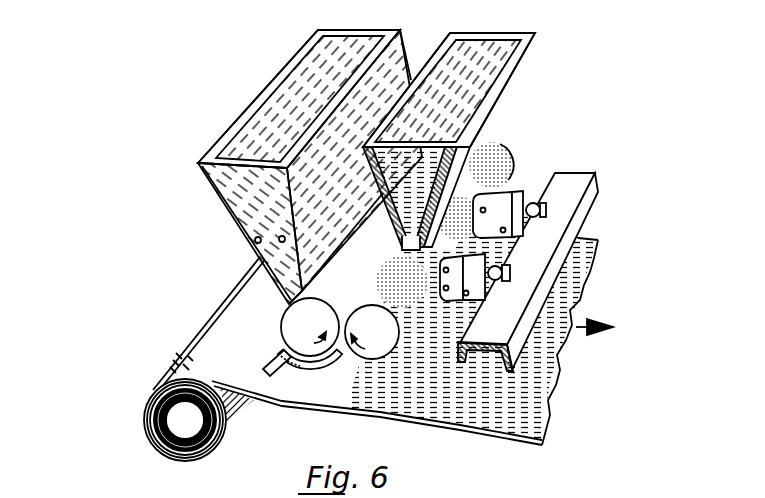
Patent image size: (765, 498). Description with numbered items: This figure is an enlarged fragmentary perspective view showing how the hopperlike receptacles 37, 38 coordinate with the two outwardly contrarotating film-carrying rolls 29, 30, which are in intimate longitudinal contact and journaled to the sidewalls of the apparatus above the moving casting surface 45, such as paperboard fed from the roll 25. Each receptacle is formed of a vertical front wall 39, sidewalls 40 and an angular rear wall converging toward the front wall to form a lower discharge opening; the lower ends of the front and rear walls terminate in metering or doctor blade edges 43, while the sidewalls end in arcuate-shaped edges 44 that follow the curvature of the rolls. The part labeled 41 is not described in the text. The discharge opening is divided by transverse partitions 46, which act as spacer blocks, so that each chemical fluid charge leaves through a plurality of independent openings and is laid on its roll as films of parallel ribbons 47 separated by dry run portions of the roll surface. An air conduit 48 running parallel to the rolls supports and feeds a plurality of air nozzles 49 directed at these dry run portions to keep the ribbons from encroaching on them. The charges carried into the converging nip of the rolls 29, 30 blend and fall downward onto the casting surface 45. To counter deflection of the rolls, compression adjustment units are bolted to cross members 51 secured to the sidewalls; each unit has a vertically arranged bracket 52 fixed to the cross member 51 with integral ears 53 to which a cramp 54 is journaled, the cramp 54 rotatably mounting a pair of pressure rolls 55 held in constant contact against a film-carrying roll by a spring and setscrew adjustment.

The roll 25 is at (160, 404).
The contrarotating film-carrying roll 29 is at (310, 327).
The contrarotating film-carrying roll 30 is at (372, 332).
The receptacle 37 is at (296, 99).
The receptacle 38 is at (613, 32).
The vertical front wall 39 is at (398, 62).
The sidewall 40 is at (248, 226).
The trough rim flange 41 is at (213, 188).
The metering or doctor blade edge 43 is at (395, 249).
The arcuate-shaped edge 44 is at (284, 298).
The casting surface 45 is at (330, 387).
The transverse partition 46 is at (398, 238).
The film of parallel ribbon 47 is at (507, 160).
The air conduit 48 is at (273, 352).
The air nozzle 49 is at (303, 372).
The cross member 51 is at (590, 212).
The bracket 52 is at (528, 200).
The integral ear 53 is at (478, 304).
The cramp 54 is at (89, 491).
The pressure roll 55 is at (8, 491).